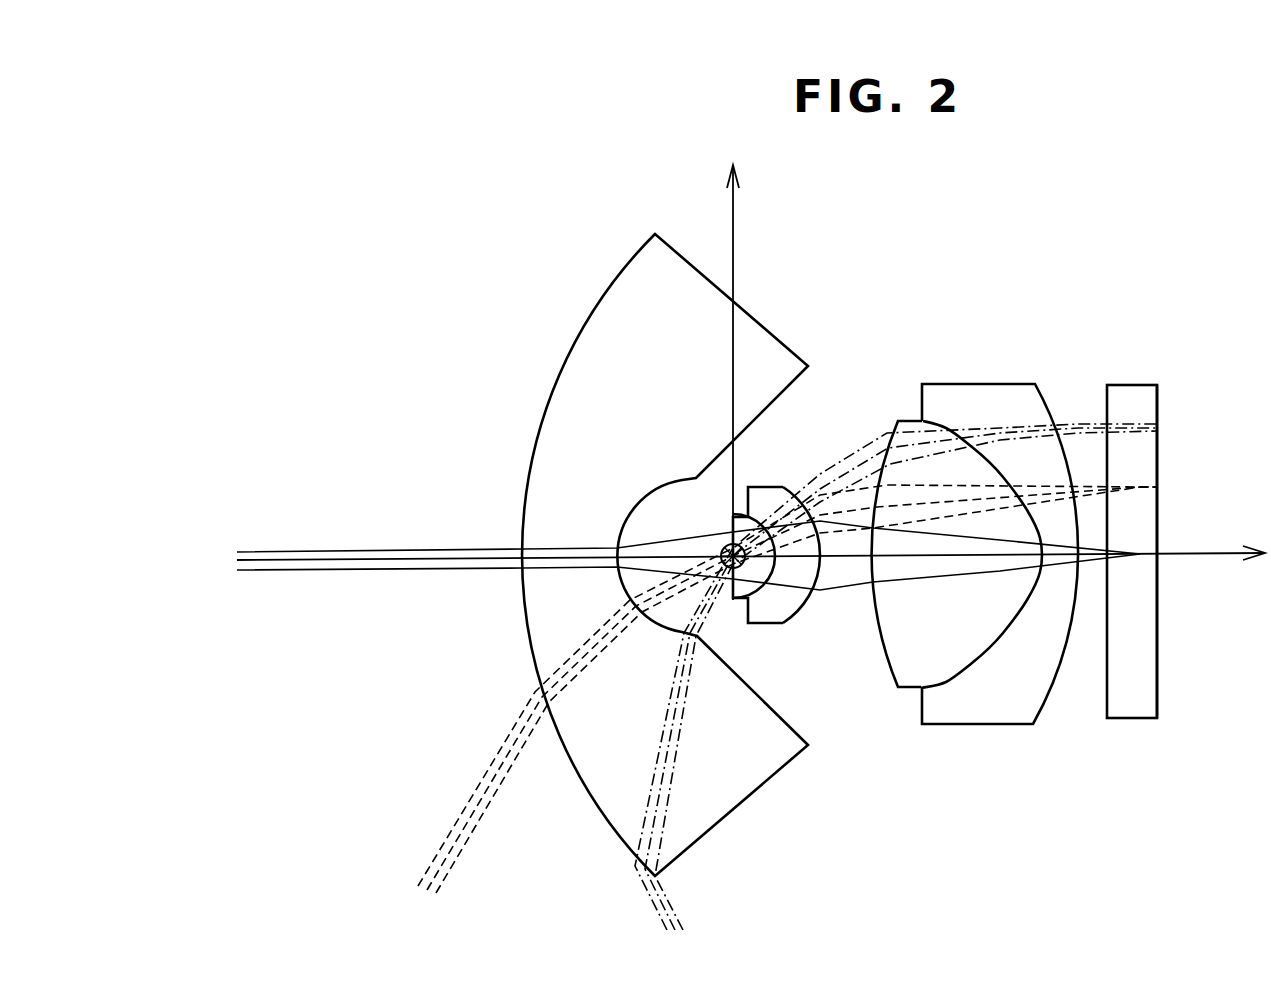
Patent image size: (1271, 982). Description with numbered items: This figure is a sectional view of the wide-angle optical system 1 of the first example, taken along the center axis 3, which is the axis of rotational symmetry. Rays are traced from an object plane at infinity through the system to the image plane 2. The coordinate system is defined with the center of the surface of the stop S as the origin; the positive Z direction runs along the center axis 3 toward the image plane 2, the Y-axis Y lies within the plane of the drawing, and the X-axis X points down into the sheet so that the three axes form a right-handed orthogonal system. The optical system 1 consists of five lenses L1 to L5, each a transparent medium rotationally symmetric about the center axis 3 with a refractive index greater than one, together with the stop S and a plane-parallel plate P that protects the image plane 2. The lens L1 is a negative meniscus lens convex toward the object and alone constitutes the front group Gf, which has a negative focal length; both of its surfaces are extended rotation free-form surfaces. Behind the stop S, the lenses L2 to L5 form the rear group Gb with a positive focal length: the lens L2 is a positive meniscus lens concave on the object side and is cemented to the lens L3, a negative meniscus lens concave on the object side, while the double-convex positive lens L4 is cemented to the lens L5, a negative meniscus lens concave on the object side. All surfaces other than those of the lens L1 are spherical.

The wide-angle optical system 1 is at (915, 290).
The image plane 2 is at (1157, 665).
The center axis 3 is at (452, 561).
The front group Gf is at (560, 290).
The rear group Gb is at (1012, 335).
The lens L1 is at (718, 808).
The lens L2 is at (757, 598).
The lens L3 is at (800, 597).
The lens L4 is at (913, 672).
The lens L5 is at (977, 710).
The stop S is at (731, 600).
The plane-parallel plate P is at (1132, 710).
The X-axis X is at (751, 536).
The Y-axis Y is at (732, 369).